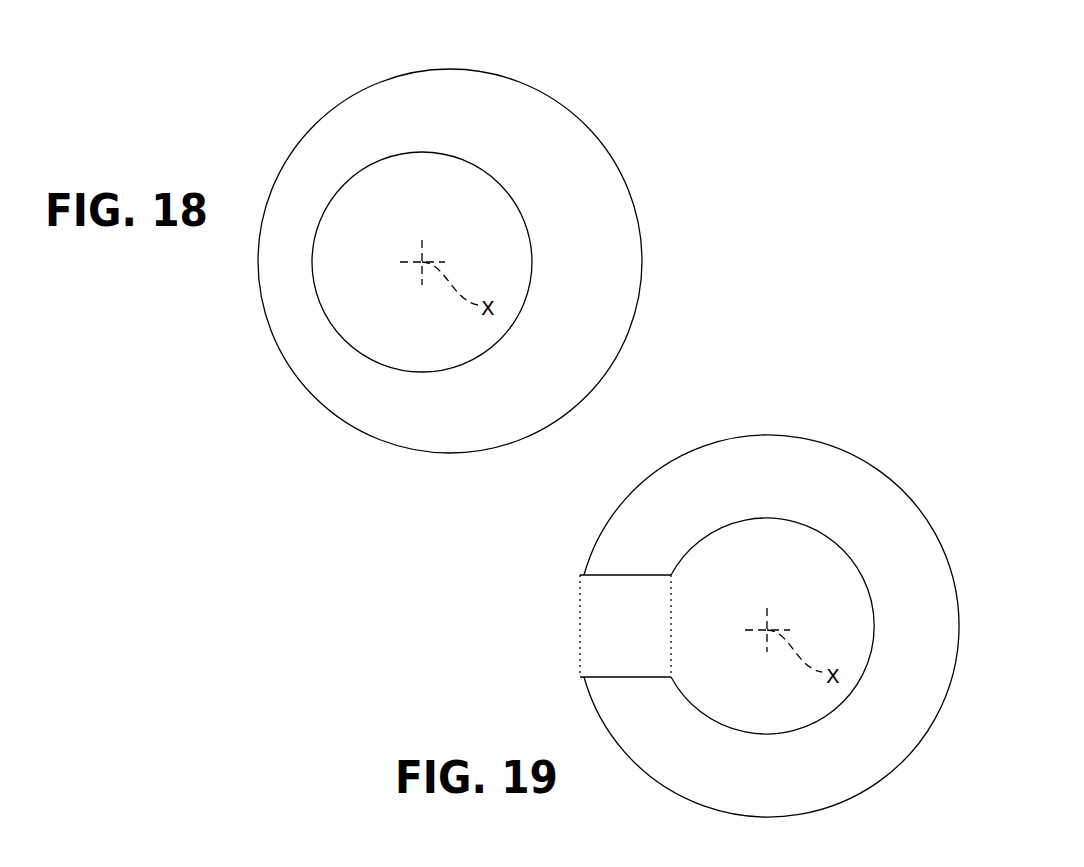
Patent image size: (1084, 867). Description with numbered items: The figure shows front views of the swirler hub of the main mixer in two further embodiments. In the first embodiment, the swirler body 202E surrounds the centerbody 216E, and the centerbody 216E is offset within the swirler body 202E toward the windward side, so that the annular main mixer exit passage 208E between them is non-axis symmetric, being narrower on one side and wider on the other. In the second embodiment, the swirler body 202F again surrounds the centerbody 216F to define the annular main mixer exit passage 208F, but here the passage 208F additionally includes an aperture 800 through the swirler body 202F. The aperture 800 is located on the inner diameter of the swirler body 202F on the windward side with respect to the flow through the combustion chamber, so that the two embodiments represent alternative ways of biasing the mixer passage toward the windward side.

In FIG. 18, the swirler body 202E is at (607, 154).
In FIG. 18, the annular main mixer exit passage 208E is at (493, 255).
In FIG. 18, the centerbody 216E is at (379, 152).
In FIG. 19, the swirler body 202F is at (794, 436).
In FIG. 19, the annular main mixer exit passage 208F is at (716, 576).
In FIG. 19, the central opening 216F is at (838, 542).
In FIG. 19, the aperture 800 is at (610, 621).